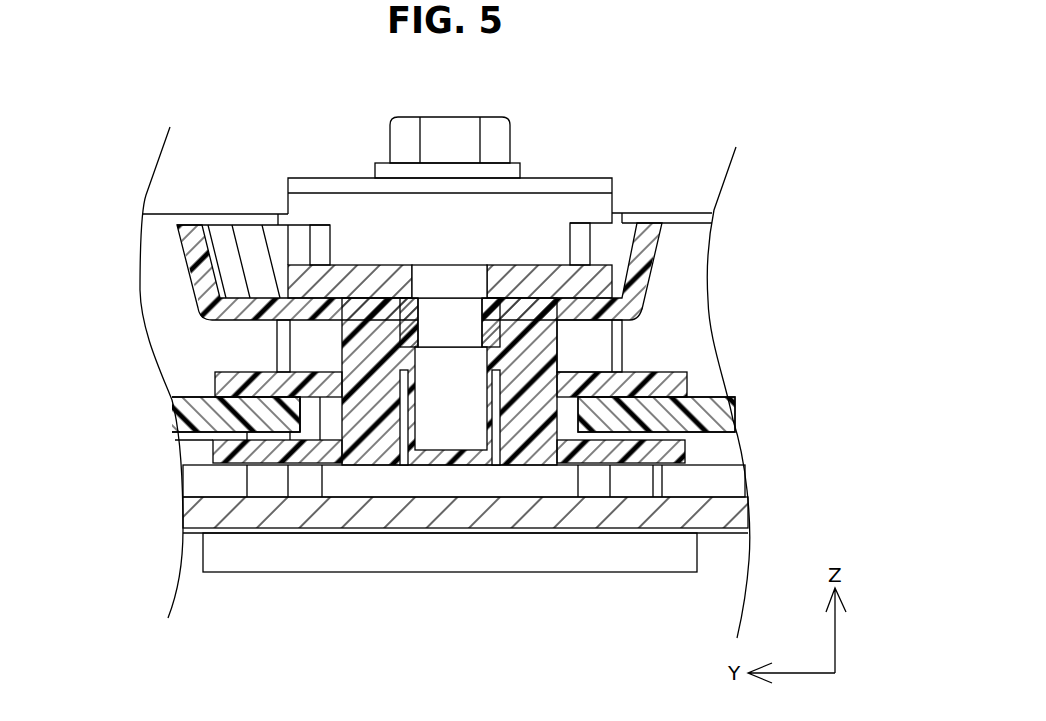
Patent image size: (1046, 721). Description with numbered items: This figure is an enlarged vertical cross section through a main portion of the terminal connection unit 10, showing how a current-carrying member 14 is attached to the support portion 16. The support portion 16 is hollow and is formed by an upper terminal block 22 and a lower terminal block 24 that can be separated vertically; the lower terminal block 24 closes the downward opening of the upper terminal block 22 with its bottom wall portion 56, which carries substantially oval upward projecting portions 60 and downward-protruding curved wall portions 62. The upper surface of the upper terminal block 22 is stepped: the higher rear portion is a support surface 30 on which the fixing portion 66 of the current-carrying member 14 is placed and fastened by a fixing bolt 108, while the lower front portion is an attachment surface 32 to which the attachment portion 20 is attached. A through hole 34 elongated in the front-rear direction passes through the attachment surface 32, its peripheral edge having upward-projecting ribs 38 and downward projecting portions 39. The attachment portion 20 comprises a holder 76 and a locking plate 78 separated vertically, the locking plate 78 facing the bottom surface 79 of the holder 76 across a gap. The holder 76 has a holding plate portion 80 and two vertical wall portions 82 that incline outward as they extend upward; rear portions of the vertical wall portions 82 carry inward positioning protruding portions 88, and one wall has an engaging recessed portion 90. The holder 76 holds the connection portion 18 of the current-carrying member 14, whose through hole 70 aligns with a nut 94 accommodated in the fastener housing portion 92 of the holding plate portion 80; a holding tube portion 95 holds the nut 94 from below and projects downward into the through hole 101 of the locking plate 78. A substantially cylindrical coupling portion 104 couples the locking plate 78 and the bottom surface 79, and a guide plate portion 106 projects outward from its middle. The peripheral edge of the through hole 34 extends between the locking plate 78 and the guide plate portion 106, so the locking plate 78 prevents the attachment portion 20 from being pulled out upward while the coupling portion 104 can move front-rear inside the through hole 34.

The terminal connection unit 10 is at (702, 116).
The current-carrying member 14 is at (406, 180).
The support portion 16 is at (517, 456).
The connection portion 18 is at (355, 280).
The attachment portion 20 is at (656, 205).
The upper terminal block 22 is at (755, 416).
The lower terminal block 24 is at (765, 507).
The support surface 30 is at (163, 214).
The attachment surface 32 is at (185, 398).
The through hole 34 is at (461, 413).
The rib 38 is at (597, 397).
The downward projecting portion 39 is at (330, 440).
The bottom wall portion 56 is at (718, 513).
The upward projecting portion 60 is at (595, 480).
The curved wall portion 62 is at (503, 558).
The fixing portion 66 is at (535, 185).
The through hole 70 is at (412, 278).
The holder 76 is at (437, 260).
The locking plate 78 is at (665, 457).
The bottom surface 79 is at (248, 318).
The holding plate portion 80 is at (262, 310).
The vertical wall portion 82 is at (648, 250).
The positioning protruding portion 88 is at (318, 240).
The engaging recessed portion 90 is at (207, 257).
The fastener housing portion 92 is at (400, 322).
The nut 94 is at (490, 320).
The holding tube portion 95 is at (465, 470).
The through hole 101 is at (415, 470).
The coupling portion 104 is at (528, 455).
The guide plate portion 106 is at (680, 385).
The fixing bolt 108 is at (452, 140).